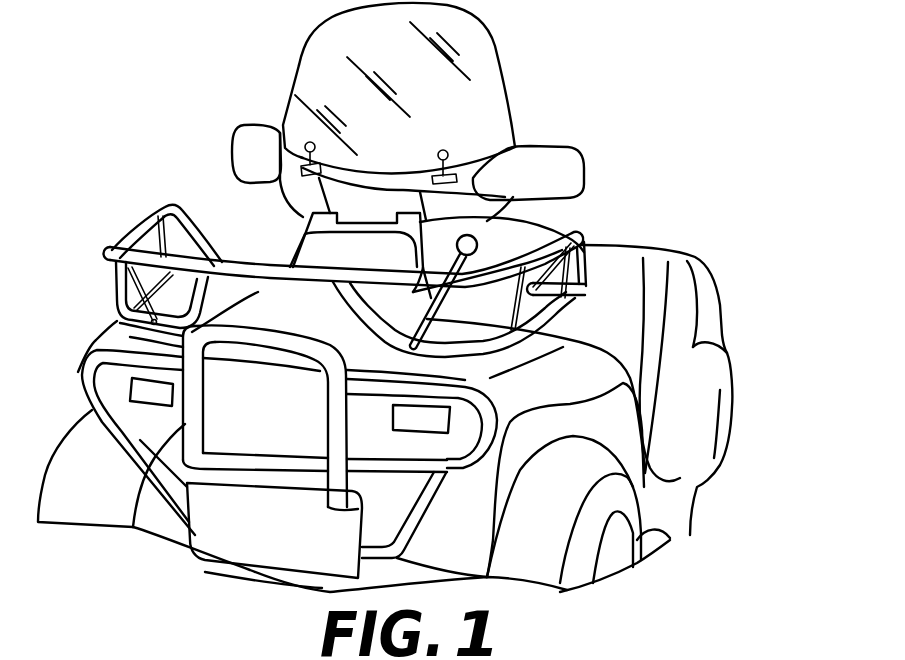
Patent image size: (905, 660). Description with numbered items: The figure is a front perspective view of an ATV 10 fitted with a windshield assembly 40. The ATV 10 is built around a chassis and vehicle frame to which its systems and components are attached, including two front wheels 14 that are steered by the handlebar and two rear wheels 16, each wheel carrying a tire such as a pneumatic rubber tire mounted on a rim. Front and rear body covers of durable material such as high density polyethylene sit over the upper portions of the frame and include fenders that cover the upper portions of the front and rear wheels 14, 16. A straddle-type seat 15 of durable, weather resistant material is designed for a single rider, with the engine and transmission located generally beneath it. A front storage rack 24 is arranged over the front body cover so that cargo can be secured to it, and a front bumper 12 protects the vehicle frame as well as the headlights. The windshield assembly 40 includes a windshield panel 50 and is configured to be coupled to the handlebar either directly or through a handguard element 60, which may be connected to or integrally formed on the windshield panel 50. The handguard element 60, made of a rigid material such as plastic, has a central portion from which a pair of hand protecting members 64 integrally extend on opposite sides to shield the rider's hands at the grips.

The ATV 10 is at (658, 97).
The front bumper 12 is at (128, 463).
The front wheels 14 is at (668, 538).
The straddle-type seat 15 is at (563, 220).
The rear wheels 16 is at (729, 364).
The front storage rack 24 is at (150, 223).
The windshield assembly 40 is at (299, 64).
The windshield panel 50 is at (443, 104).
The handguard element 60 is at (560, 184).
The hand protecting members 64 is at (542, 146).